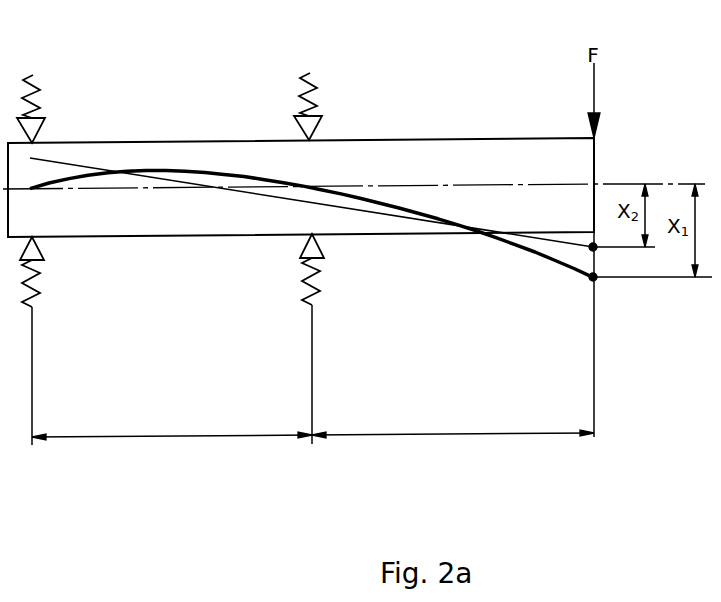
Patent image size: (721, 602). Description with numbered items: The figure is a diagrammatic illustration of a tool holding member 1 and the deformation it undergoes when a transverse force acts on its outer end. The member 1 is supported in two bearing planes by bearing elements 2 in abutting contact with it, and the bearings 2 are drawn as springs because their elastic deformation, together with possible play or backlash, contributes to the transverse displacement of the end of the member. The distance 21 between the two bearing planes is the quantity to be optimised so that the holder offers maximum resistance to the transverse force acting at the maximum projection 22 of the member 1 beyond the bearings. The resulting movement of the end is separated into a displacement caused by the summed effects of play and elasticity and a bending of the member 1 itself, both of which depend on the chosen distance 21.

The tool holding member 1 is at (497, 157).
The bearing elements 2 is at (178, 259).
The distance between the bearings 21 is at (172, 426).
The maximum projection 22 is at (453, 424).